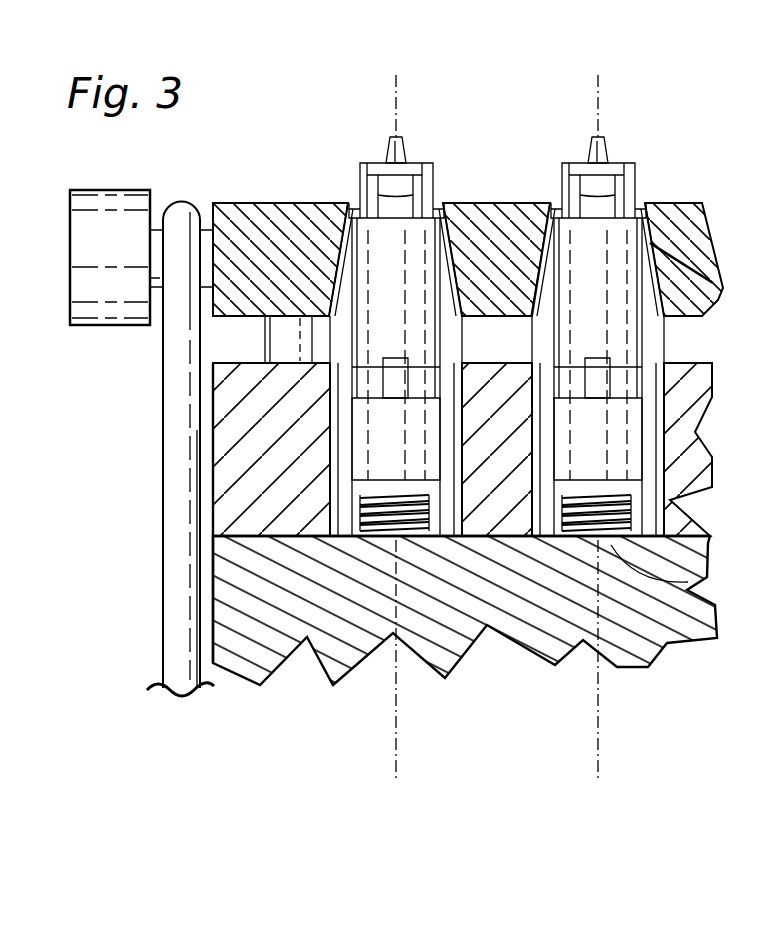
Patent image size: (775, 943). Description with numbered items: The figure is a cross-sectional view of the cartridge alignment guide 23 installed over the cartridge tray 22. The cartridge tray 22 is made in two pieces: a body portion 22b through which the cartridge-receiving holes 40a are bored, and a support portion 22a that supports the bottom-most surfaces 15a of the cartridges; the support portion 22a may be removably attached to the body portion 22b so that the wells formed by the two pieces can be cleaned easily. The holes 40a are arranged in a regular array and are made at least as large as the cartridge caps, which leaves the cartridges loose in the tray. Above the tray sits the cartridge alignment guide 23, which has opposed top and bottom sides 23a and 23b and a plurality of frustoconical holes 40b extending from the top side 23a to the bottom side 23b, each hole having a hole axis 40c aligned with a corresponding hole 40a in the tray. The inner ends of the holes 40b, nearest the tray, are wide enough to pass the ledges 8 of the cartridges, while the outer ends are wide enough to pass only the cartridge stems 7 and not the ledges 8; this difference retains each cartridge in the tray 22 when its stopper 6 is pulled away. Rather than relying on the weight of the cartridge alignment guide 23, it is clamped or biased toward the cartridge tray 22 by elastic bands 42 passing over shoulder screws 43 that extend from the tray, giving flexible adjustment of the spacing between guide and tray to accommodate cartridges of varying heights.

The stopper 6 is at (605, 156).
The cartridge stem 7 is at (562, 178).
The ledge 8 is at (444, 210).
The bottom-most surface 15a is at (688, 583).
The cartridge tray 22 is at (205, 497).
The support portion 22a is at (237, 455).
The body portion 22b is at (240, 663).
The cartridge alignment guide 23 is at (715, 297).
The top side 23a is at (680, 205).
The bottom side 23b is at (688, 318).
The holes 40a is at (655, 452).
The holes 40b is at (650, 268).
The hole axis 40c is at (392, 104).
The elastic band 42 is at (172, 645).
The shoulder screw 43 is at (124, 249).